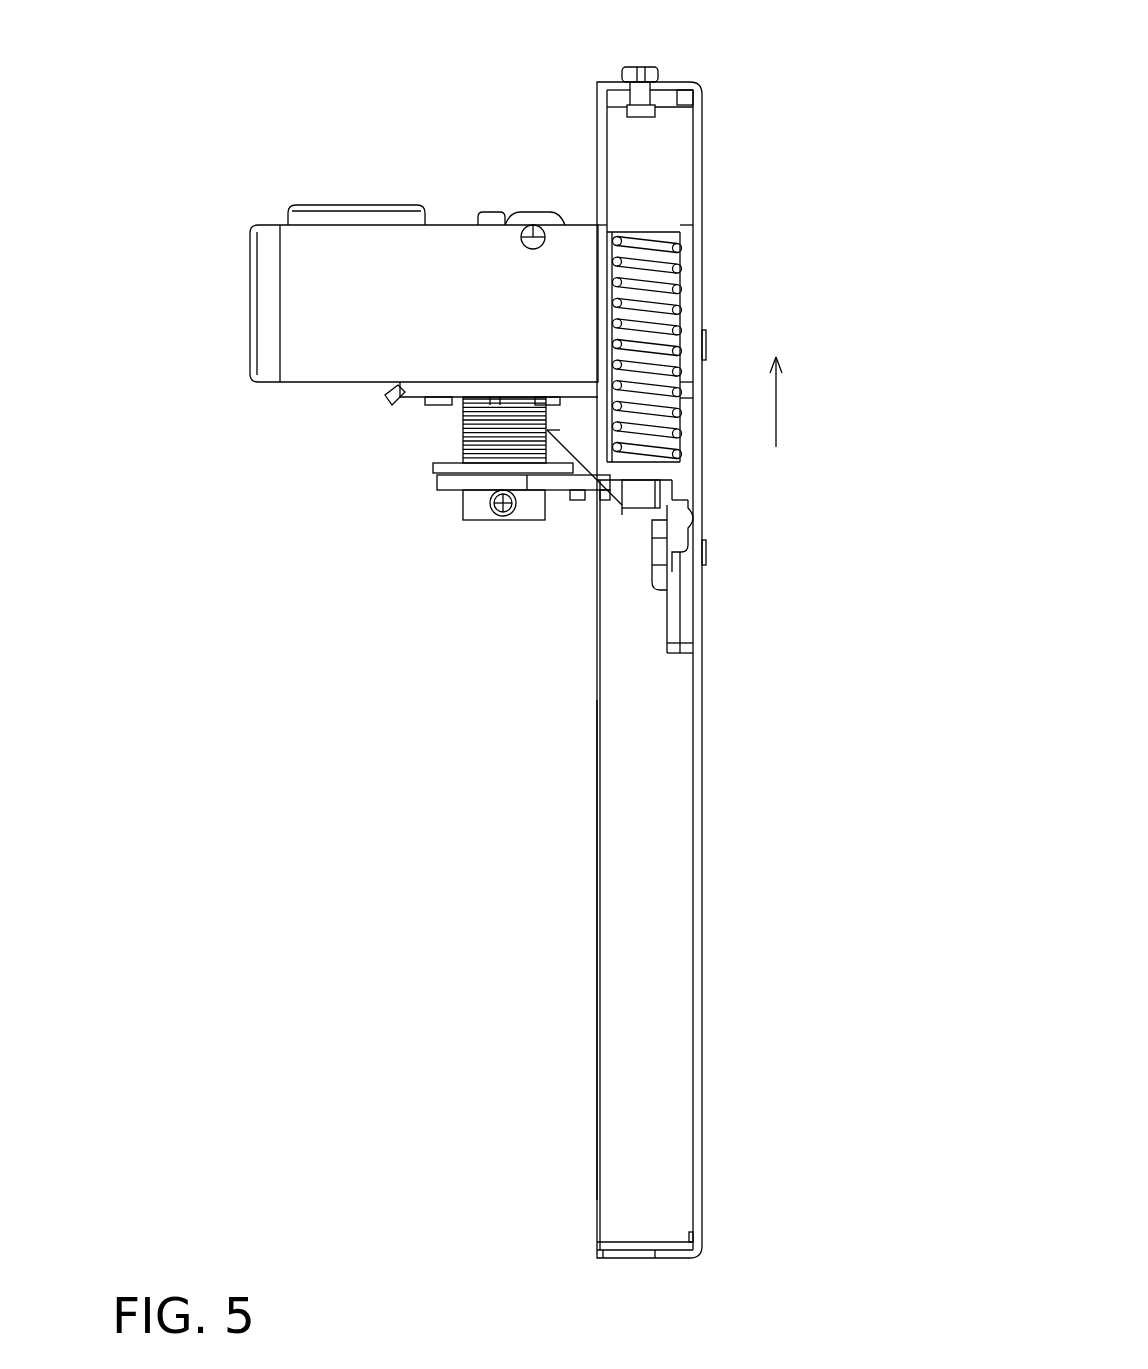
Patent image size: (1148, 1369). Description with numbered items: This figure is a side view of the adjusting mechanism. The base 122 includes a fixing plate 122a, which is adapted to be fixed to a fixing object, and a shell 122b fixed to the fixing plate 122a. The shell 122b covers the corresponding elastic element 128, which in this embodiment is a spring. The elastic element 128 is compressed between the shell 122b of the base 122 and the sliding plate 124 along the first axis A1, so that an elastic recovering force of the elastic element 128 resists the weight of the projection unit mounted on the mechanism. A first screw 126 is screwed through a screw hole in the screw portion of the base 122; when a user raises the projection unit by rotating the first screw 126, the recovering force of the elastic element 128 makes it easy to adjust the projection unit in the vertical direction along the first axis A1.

The base 122 is at (722, 623).
The fixing plate 122a is at (650, 810).
The shell 122b is at (635, 473).
The sliding plate 124 is at (650, 235).
The first screw 126 is at (462, 431).
The elastic element 128 is at (637, 245).
The first axis A1 is at (776, 404).